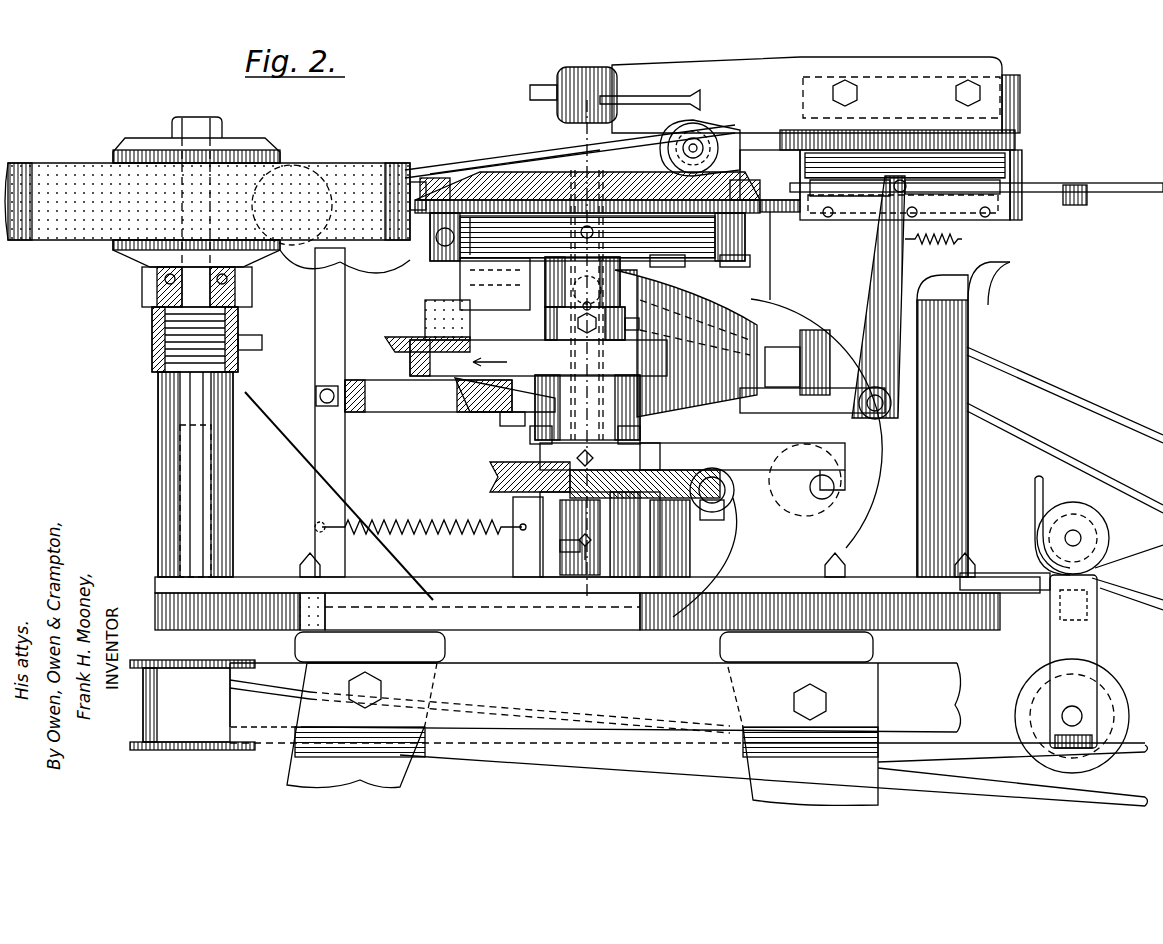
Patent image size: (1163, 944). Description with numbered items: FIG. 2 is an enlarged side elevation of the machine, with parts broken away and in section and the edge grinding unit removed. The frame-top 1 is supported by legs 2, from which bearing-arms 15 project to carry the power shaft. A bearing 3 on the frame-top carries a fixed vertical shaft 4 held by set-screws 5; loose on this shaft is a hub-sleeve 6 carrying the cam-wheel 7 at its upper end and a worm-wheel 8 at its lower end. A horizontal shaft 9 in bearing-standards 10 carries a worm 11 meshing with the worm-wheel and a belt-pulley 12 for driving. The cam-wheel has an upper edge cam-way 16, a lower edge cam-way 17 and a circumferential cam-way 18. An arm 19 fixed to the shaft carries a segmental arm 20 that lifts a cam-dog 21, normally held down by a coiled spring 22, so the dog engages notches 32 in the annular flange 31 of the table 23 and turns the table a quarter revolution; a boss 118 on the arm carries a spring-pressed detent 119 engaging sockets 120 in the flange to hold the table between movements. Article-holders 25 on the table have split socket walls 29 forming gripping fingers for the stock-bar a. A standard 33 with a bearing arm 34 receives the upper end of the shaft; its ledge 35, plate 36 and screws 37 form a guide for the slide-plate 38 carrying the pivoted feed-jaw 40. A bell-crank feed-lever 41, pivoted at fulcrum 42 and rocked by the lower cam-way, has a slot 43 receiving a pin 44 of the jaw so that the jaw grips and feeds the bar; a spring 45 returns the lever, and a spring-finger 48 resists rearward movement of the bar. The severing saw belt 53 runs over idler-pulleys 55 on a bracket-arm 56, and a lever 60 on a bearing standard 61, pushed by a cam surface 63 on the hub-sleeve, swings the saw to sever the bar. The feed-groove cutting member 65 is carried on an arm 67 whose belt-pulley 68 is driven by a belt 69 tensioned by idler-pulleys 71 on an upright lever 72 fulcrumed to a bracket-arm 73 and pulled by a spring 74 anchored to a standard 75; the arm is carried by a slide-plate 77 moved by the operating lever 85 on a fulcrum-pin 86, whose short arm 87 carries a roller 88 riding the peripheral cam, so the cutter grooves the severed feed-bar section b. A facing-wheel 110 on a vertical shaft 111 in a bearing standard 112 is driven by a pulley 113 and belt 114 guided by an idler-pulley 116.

The frame-top 1 is at (628, 640).
The legs 2 is at (396, 772).
The bearing 3 is at (565, 545).
The vertical shaft 4 is at (580, 130).
The set-screws 5 is at (588, 550).
The hub-sleeve 6 is at (592, 168).
The cam-wheel 7 is at (410, 358).
The worm-wheel 8 is at (488, 479).
The horizontal shaft 9 is at (736, 489).
The bearing-standards 10 is at (758, 542).
The worm 11 is at (713, 510).
The belt-pulley 12 is at (785, 520).
The bearing-arms 15 is at (950, 685).
The upper edge cam-way 16 is at (738, 292).
The lower edge cam-way 17 is at (465, 400).
The circumferential cam-way 18 is at (392, 344).
The arm 19 is at (471, 361).
The segmental arm 20 is at (425, 306).
The cam-dog 21 is at (455, 245).
The coiled spring 22 is at (576, 320).
The table 23 is at (637, 198).
The article-holders 25 is at (440, 185).
The split 29 is at (420, 180).
The annular flange 31 is at (680, 250).
The notches 32 is at (700, 250).
The standard 33 is at (947, 474).
The bearing arm 34 is at (693, 70).
The ledge 35 is at (857, 200).
The plate 36 is at (1000, 222).
The screws 37 is at (990, 222).
The slide-plate 38 is at (1075, 204).
The feed-jaw 40 is at (890, 192).
The feed-lever 41 is at (900, 312).
The fulcrum 42 is at (892, 403).
The vertically elongated slot 43 is at (902, 182).
The pin 44 is at (915, 186).
The coiled contractile spring 45 is at (938, 244).
The spring-finger 48 is at (790, 206).
The belt 53 is at (1043, 494).
The idler-pulleys 55 is at (1100, 531).
The bracket-arm 56 is at (1085, 647).
The lever 60 is at (775, 452).
The bearing standard 61 is at (690, 561).
The cam surface 63 is at (660, 453).
The feed-groove cutting member 65 is at (702, 134).
The arm 67 is at (790, 166).
The belt-pulley 68 is at (720, 140).
The belt 69 is at (1045, 368).
The idler-pulleys 71 is at (318, 266).
The upright lever 72 is at (325, 330).
The bracket-arm 73 is at (378, 411).
The coiled contractile spring 74 is at (392, 520).
The standard 75 is at (528, 546).
The slide-plate 77 is at (795, 222).
The operating lever 85 is at (830, 350).
The fulcrum-pin 86 is at (833, 488).
The short arm 87 is at (825, 362).
The roller 88 is at (795, 346).
The facing-wheel 110 is at (313, 180).
The vertical shaft 111 is at (186, 300).
The bearing standard 112 is at (190, 468).
The pulley 113 is at (250, 656).
The belt 114 is at (645, 737).
The idler-pulley 116 is at (1036, 690).
The boss 118 is at (505, 278).
The spring-pressed detent 119 is at (470, 216).
The sockets 120 is at (594, 232).
The stock-bar a is at (1112, 183).
The feed-bar section b is at (491, 150).